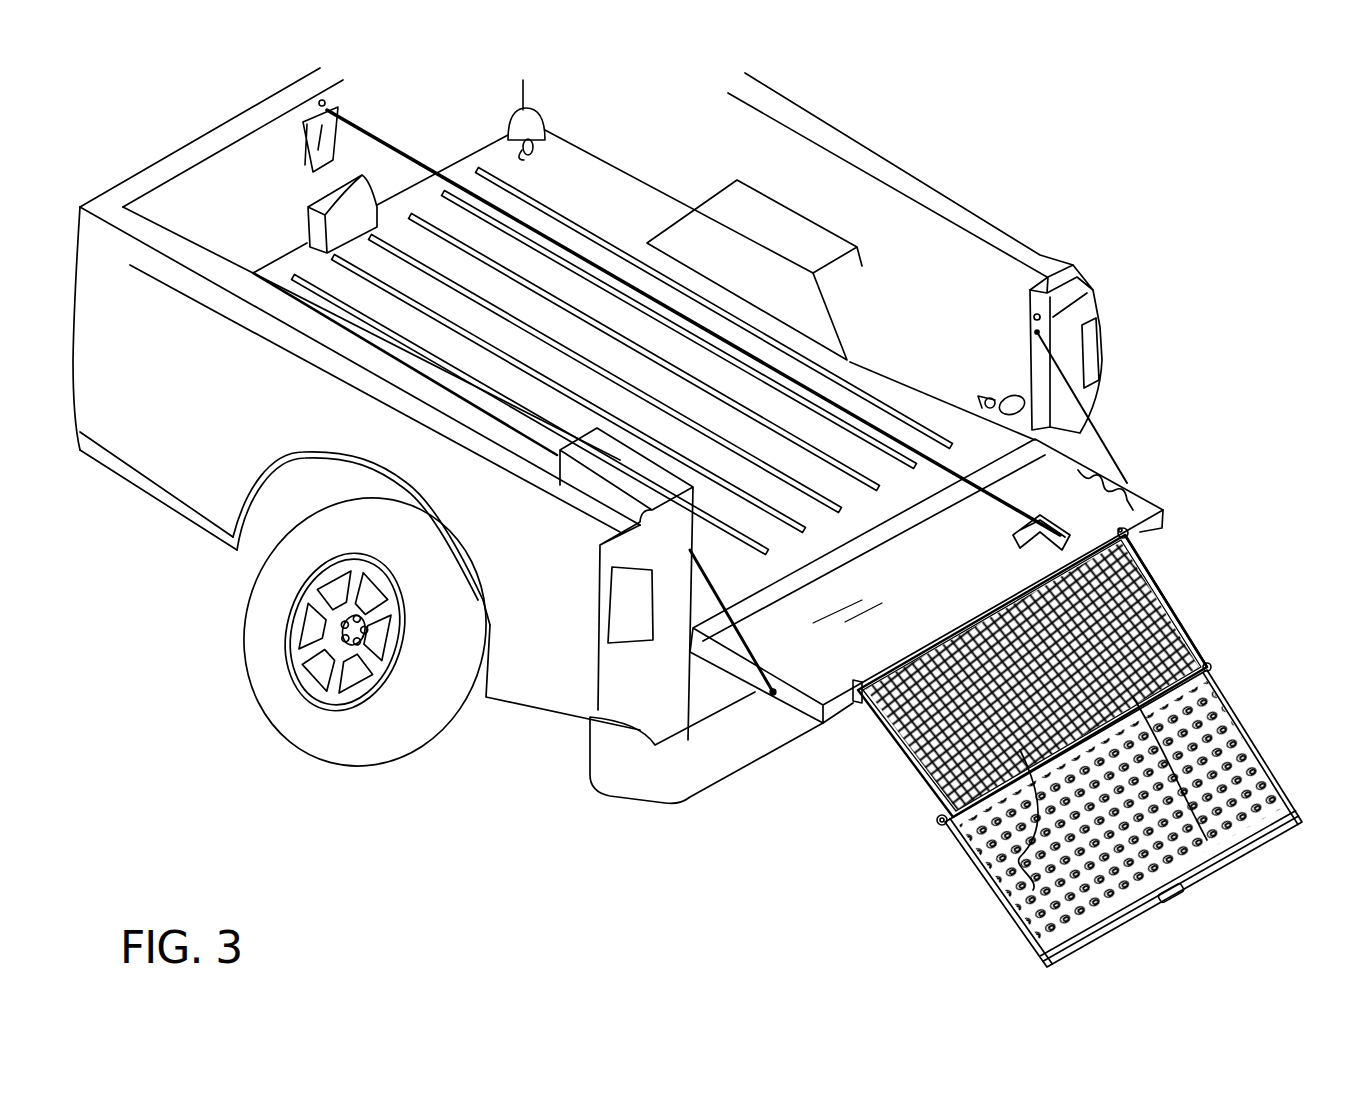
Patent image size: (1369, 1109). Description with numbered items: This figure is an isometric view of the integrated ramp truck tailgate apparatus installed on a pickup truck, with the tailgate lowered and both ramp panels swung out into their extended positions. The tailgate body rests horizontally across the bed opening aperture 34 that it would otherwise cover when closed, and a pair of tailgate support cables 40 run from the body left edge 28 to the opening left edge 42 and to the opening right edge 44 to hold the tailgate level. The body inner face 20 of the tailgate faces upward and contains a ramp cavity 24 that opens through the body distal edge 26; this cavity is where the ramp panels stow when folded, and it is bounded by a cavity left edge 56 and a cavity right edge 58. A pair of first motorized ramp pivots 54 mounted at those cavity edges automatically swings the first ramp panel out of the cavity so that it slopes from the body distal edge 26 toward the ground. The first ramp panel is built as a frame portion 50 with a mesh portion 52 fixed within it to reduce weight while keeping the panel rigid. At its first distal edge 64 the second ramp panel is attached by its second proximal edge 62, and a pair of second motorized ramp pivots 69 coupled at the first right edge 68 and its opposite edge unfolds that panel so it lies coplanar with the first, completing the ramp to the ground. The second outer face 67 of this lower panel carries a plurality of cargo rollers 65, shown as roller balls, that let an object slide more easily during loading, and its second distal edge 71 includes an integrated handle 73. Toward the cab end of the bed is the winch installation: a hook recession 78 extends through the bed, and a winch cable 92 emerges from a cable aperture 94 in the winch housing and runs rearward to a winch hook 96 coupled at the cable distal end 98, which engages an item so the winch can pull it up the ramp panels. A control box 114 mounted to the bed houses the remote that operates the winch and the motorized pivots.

The body inner face 20 is at (1123, 470).
The ramp cavity 24 is at (845, 652).
The body distal edge 26 is at (1150, 527).
The body left edge 28 is at (793, 705).
The bed opening aperture 34 is at (1097, 345).
The tailgate support cables 40 is at (1012, 375).
The opening left edge 42 is at (642, 512).
The opening right edge 44 is at (1035, 330).
The frame portion 50 is at (1172, 600).
The mesh portion 52 is at (1138, 568).
The first motorized ramp pivots 54 is at (853, 695).
The cavity left edge 56 is at (825, 610).
The cavity right edge 58 is at (1066, 505).
The second proximal edge 62 is at (1165, 701).
The first distal edge 64 is at (1201, 860).
The cargo rollers 65 is at (1262, 796).
The second outer face 67 is at (1033, 890).
The first right edge 68 is at (1165, 640).
The second motorized ramp pivots 69 is at (1000, 857).
The second distal edge 71 is at (1201, 885).
The integrated handle 73 is at (1173, 901).
The hook recession 78 is at (307, 160).
The winch cable 92 is at (860, 370).
The cable aperture 94 is at (320, 103).
The winch hook 96 is at (1062, 512).
The cable distal end 98 is at (1017, 507).
The control box 114 is at (637, 475).